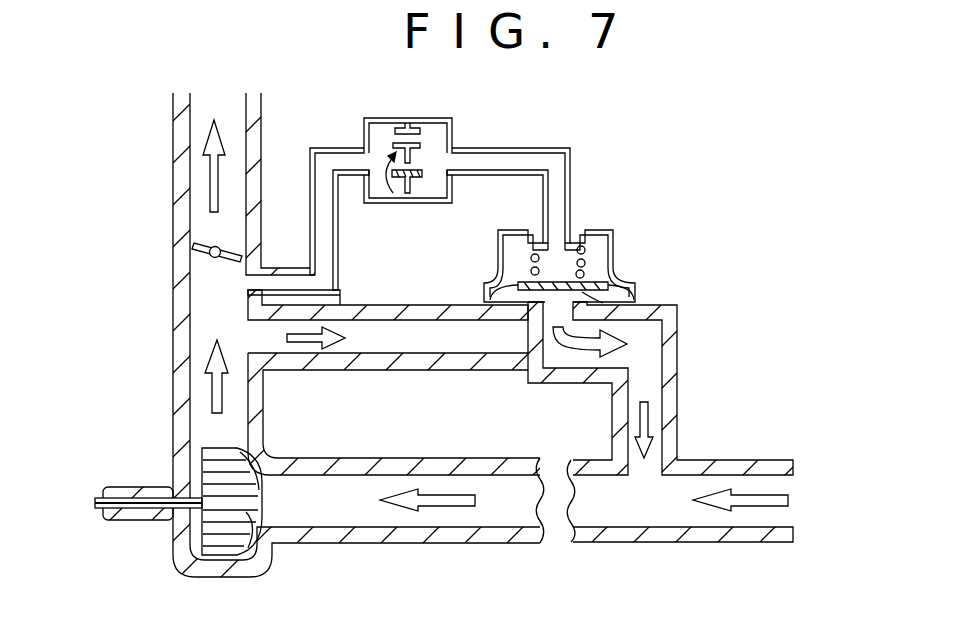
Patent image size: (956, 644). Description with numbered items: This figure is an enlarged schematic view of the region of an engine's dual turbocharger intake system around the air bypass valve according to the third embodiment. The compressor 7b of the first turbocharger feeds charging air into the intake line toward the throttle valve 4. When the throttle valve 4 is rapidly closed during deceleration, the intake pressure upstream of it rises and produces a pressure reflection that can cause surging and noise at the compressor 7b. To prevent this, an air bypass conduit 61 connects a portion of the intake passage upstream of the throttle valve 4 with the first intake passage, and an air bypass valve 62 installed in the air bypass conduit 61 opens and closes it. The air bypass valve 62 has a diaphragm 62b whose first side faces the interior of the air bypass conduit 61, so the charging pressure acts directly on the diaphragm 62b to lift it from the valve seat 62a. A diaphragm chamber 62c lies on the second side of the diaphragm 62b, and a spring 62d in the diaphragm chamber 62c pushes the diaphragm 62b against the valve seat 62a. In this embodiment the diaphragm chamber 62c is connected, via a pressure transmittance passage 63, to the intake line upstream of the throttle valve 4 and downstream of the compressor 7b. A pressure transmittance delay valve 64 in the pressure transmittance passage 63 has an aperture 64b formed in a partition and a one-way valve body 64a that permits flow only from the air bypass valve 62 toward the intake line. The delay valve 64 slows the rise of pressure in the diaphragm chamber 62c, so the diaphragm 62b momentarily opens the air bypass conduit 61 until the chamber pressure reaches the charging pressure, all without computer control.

The throttle valve 4 is at (233, 252).
The compressor 7b is at (228, 518).
The air bypass conduit 61 is at (373, 337).
The air bypass valve 62 is at (593, 228).
The valve seat 62a is at (614, 287).
The diaphragm 62b is at (633, 295).
The diaphragm chamber 62c is at (602, 252).
The spring 62d is at (530, 256).
The pressure transmittance passage 63 is at (531, 153).
The pressure transmittance delay valve 64 is at (455, 124).
The one-way valve body 64a is at (389, 191).
The aperture 64b is at (397, 130).